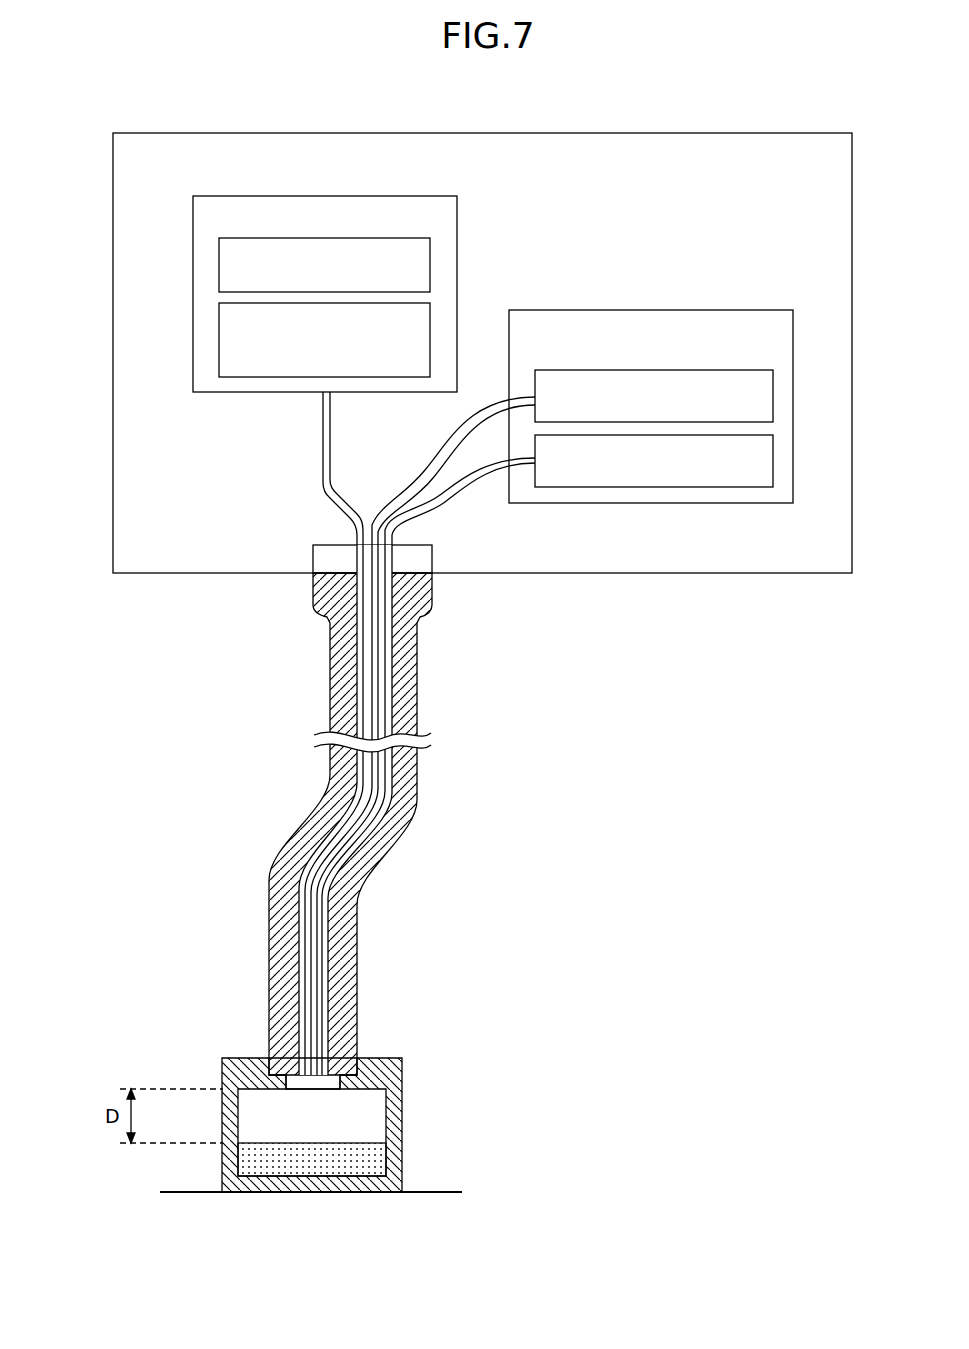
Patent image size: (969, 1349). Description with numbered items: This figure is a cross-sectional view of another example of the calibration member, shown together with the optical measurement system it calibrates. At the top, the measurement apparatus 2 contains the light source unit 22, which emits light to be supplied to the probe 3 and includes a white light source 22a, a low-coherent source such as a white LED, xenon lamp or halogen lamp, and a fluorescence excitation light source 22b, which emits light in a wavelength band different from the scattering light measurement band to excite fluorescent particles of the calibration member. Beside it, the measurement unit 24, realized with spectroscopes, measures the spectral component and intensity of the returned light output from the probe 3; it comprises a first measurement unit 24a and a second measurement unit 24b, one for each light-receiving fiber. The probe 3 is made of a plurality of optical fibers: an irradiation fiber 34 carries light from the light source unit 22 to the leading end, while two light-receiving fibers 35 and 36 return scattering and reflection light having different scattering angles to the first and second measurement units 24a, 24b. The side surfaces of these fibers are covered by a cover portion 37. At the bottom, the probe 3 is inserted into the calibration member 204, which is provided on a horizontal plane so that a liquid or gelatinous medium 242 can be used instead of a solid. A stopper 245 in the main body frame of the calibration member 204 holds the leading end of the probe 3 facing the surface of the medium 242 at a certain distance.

The measurement apparatus 2 is at (795, 133).
The light source unit 22 is at (403, 197).
The white light source 22a is at (219, 262).
The fluorescence excitation light source 22b is at (219, 345).
The measurement unit 24 is at (718, 311).
The first measurement unit 24a is at (773, 394).
The second measurement unit 24b is at (773, 459).
The probe 3 is at (375, 733).
The irradiation fiber 34 is at (360, 672).
The light-receiving fiber 35 is at (373, 651).
The light-receiving fiber 36 is at (387, 693).
The cover portion 37 is at (297, 838).
The calibration member 204 is at (408, 1063).
The medium 242 is at (370, 1160).
The stopper 245 is at (288, 1096).